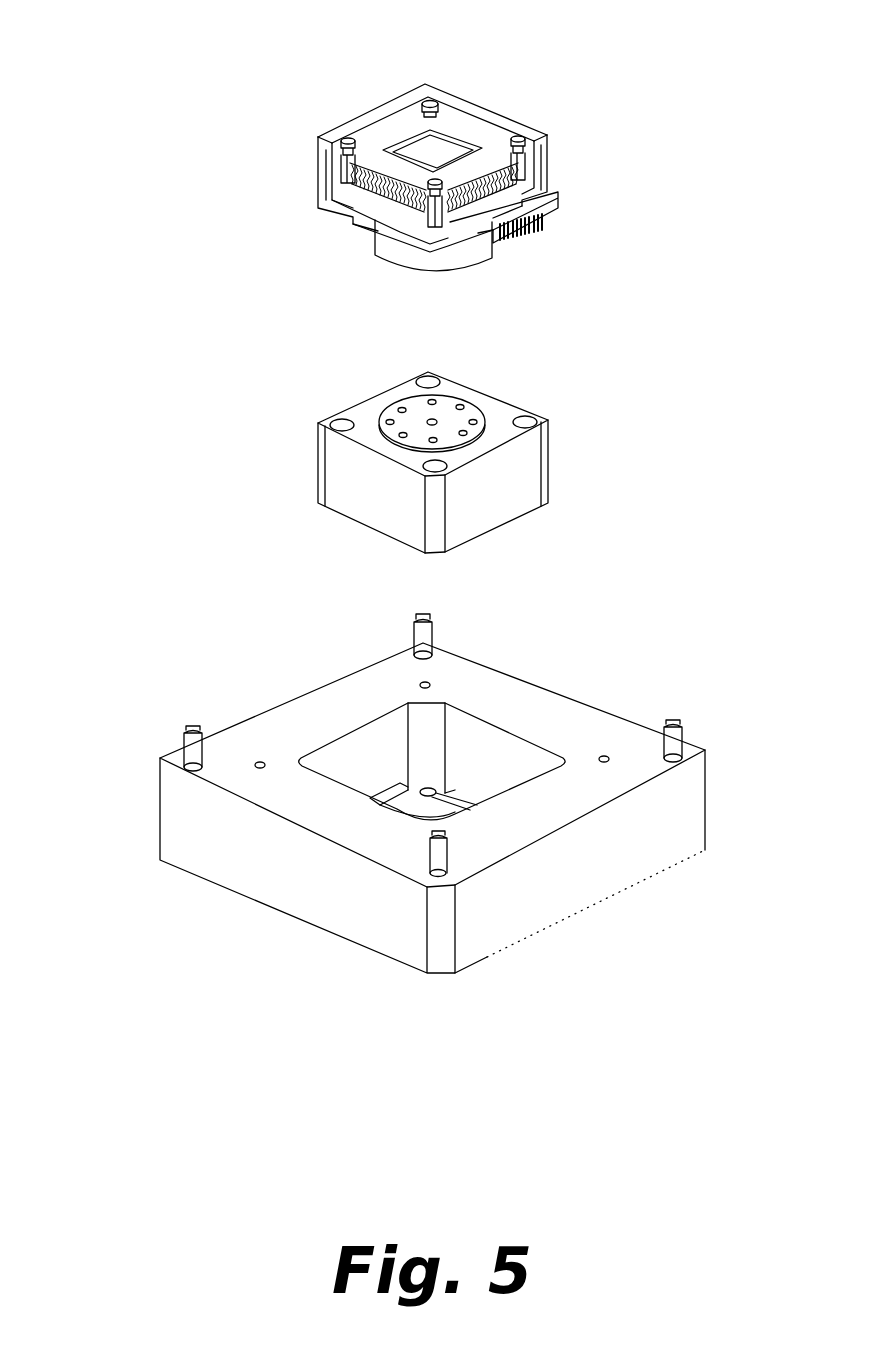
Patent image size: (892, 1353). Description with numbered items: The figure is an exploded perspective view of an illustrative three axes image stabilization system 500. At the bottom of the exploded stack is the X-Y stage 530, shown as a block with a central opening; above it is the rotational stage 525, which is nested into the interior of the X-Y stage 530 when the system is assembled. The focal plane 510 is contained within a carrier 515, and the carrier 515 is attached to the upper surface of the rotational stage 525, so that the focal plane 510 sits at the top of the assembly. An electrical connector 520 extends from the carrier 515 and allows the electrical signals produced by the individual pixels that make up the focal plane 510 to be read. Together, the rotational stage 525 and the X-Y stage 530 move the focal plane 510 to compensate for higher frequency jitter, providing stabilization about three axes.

The three axes image stabilization system 500 is at (112, 212).
The focal plane 510 is at (415, 150).
The carrier 515 is at (540, 158).
The electrical connector 520 is at (540, 232).
The rotational stage 525 is at (528, 475).
The X-Y stage 530 is at (692, 815).